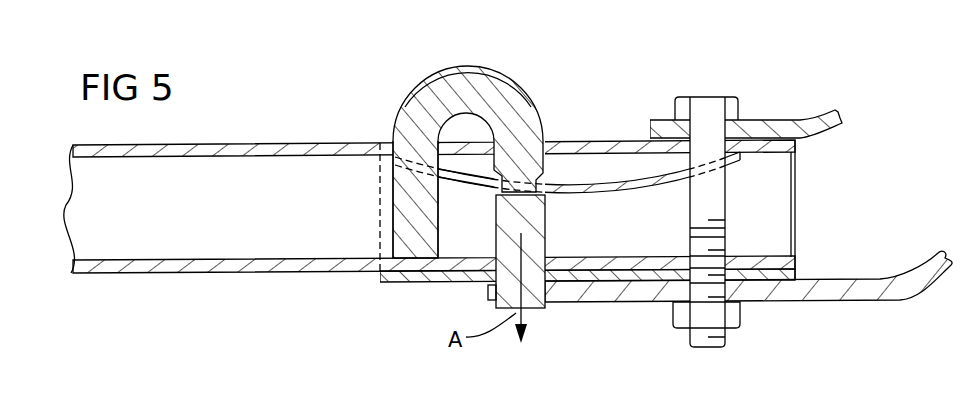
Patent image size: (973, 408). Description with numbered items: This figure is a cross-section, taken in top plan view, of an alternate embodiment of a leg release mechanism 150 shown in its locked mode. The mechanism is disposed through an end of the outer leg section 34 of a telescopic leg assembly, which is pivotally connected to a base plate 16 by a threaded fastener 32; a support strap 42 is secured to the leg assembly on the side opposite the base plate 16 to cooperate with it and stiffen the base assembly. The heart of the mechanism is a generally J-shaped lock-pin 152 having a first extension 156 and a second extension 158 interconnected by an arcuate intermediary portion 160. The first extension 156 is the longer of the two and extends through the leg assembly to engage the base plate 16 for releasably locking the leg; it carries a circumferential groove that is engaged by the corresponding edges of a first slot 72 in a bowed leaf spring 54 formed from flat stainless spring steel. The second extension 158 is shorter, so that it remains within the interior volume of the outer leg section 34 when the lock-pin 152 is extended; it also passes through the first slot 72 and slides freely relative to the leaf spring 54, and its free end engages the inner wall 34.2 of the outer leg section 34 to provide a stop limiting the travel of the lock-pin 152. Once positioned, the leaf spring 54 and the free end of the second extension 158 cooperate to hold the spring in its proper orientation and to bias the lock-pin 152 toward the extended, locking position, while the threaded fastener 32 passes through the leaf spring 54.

The outer leg section 34 is at (175, 148).
The inner wall of outer leg member 34.2 is at (314, 254).
The lock-pin 152 is at (475, 148).
The arcuate intermediary portion 160 is at (452, 74).
The second extension 158 is at (406, 131).
The first extension 156 is at (530, 297).
The leaf spring 54 is at (601, 185).
The first slot 72 is at (472, 182).
The base plate 16 is at (609, 294).
The leg release mechanism 150 is at (627, 185).
The threaded fastener 32 is at (731, 105).
The support strap 42 is at (808, 117).